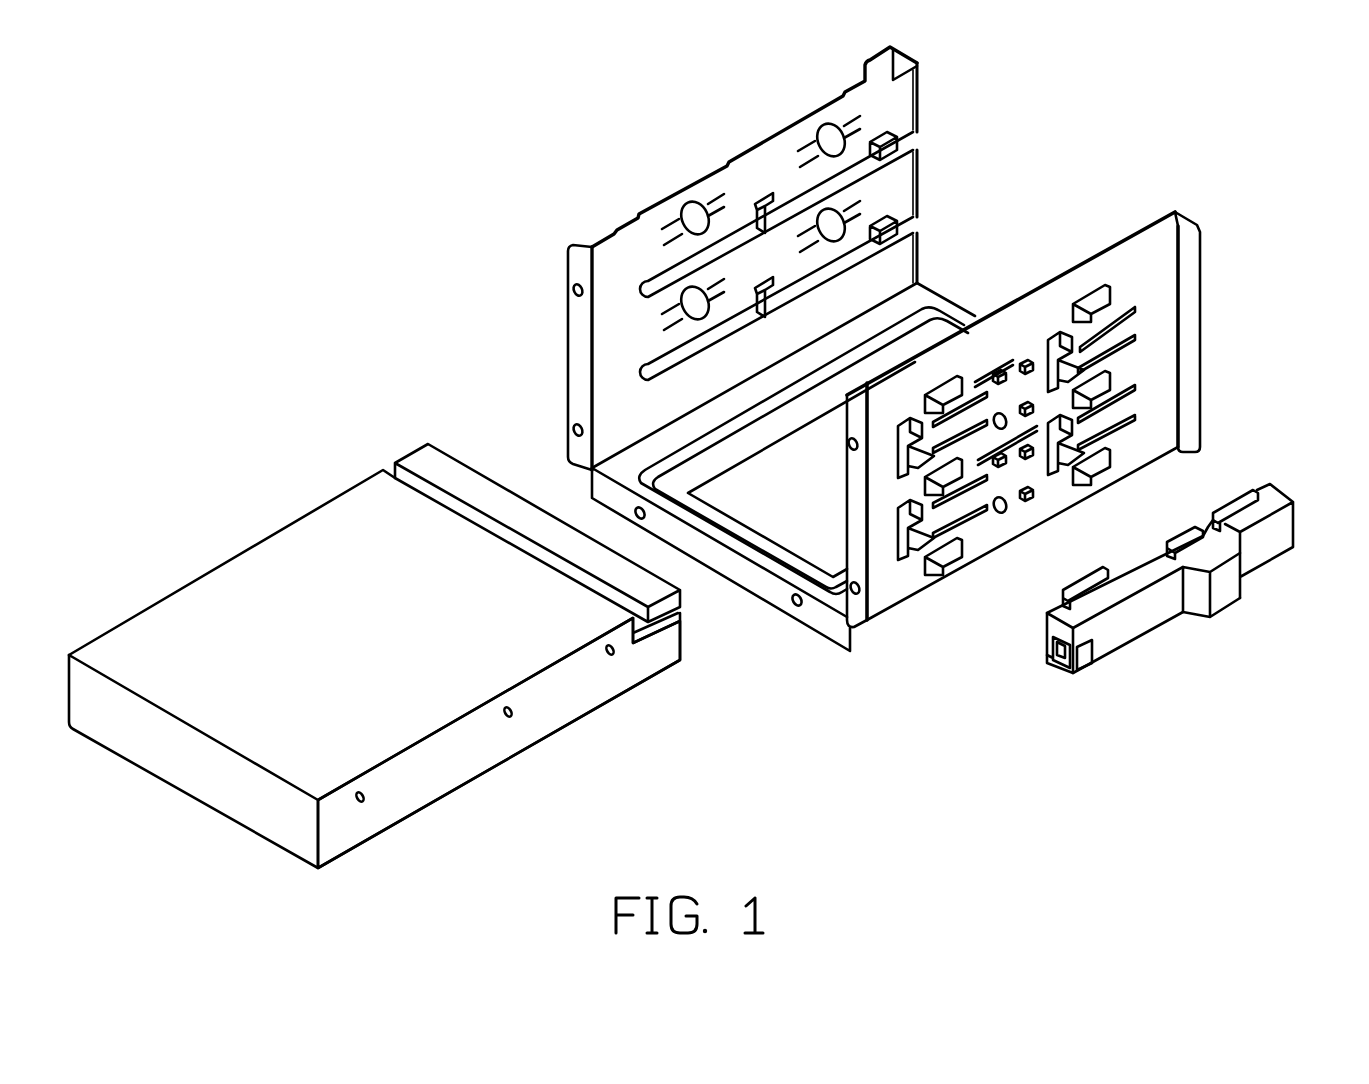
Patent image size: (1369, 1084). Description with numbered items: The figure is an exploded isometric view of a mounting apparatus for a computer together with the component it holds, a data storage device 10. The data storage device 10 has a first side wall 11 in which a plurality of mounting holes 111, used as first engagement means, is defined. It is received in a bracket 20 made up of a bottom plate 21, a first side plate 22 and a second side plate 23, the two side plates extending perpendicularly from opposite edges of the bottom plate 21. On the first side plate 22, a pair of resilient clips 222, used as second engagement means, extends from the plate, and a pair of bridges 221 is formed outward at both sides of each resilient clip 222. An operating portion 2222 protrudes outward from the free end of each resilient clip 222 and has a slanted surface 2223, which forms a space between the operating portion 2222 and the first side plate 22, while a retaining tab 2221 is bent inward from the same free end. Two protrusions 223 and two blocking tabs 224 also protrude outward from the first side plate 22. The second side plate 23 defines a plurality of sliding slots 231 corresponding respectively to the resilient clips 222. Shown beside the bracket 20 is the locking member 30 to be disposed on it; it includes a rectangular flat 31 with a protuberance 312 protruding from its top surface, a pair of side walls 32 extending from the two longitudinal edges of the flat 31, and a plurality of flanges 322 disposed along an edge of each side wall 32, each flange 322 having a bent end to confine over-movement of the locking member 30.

The data storage device 10 is at (281, 509).
The first side wall 11 is at (468, 749).
The mounting holes 111 is at (366, 798).
The bracket 20 is at (632, 204).
The bottom plate 21 is at (921, 300).
The first side plate 22 is at (1163, 238).
The bridges 221 is at (1078, 300).
The resilient clips 222 is at (1083, 432).
The retaining tab 2221 is at (1097, 423).
The operating portion 2222 is at (1050, 343).
The slanted surface 2223 is at (1108, 320).
The protrusions 223 is at (1033, 499).
The blocking tabs 224 is at (998, 516).
The second side plate 23 is at (905, 178).
The sliding slots 231 is at (790, 202).
The locking member 30 is at (1135, 651).
The rectangular flat 31 is at (1267, 543).
The protuberance 312 is at (1223, 593).
The side walls 32 is at (1276, 503).
The flanges 322 is at (1087, 593).